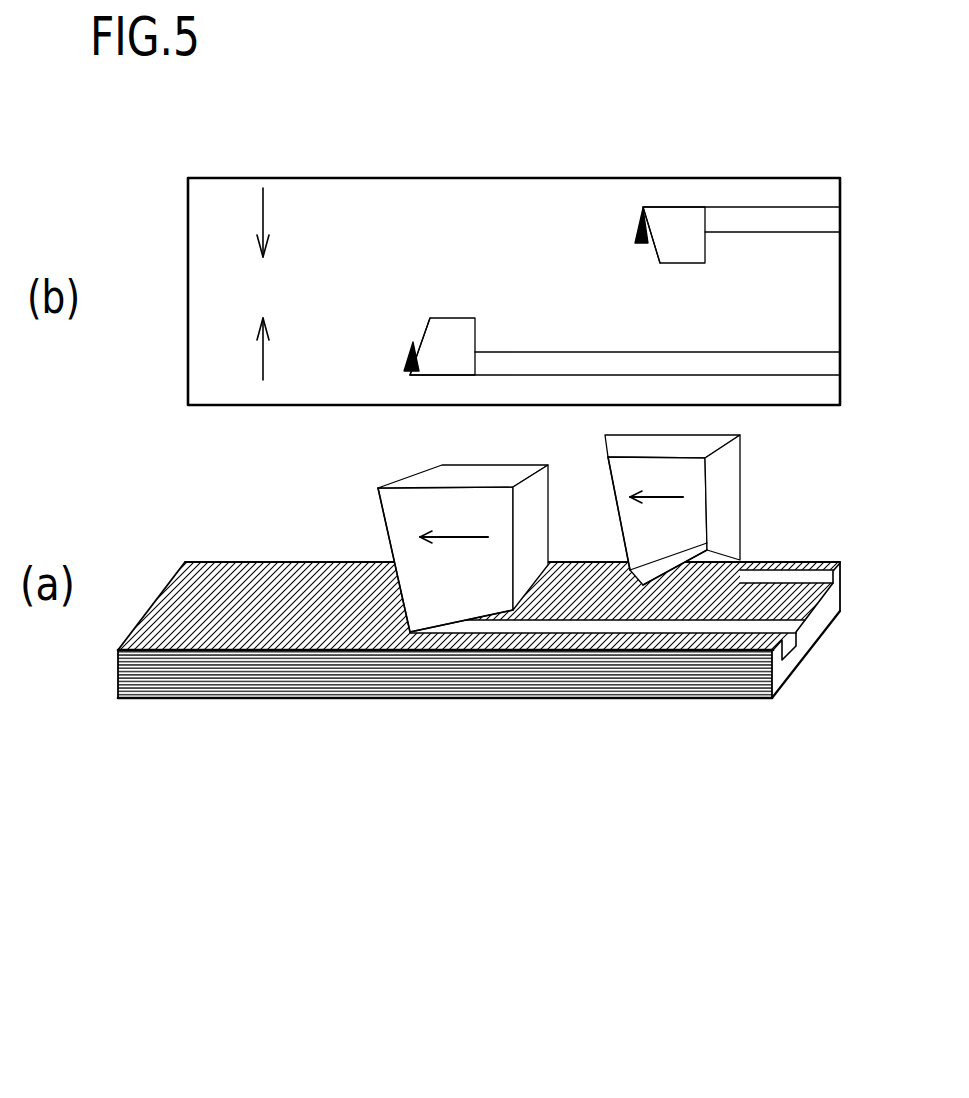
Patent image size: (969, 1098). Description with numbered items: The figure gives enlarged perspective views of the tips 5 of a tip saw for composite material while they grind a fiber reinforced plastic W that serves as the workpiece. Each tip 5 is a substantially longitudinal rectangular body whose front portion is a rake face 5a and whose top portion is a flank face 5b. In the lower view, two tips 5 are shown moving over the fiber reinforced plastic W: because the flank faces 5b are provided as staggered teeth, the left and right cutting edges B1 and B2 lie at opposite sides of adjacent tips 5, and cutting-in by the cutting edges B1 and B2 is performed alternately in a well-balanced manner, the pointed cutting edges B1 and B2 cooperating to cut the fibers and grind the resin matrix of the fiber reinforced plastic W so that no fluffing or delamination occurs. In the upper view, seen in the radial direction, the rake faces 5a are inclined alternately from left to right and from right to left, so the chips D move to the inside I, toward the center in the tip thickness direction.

The tip 5 is at (448, 337).
The rake face 5a is at (383, 488).
The flank face 5b is at (700, 557).
The chips D is at (405, 353).
The inside I is at (224, 215).
The cutting edge B1 is at (688, 572).
The cutting edge B2 is at (455, 622).
The fiber reinforced plastic W is at (525, 682).